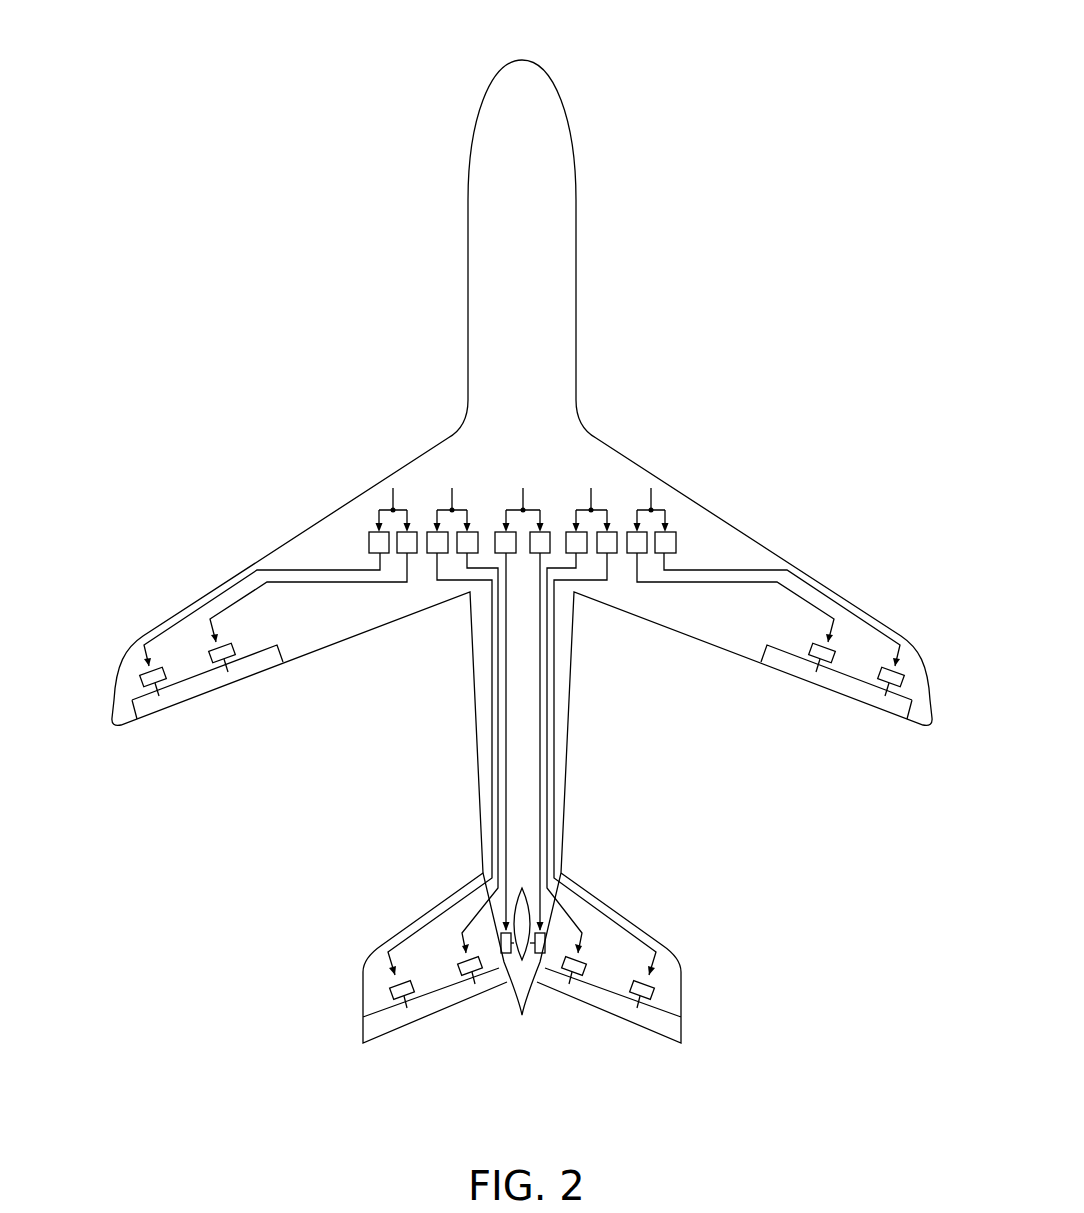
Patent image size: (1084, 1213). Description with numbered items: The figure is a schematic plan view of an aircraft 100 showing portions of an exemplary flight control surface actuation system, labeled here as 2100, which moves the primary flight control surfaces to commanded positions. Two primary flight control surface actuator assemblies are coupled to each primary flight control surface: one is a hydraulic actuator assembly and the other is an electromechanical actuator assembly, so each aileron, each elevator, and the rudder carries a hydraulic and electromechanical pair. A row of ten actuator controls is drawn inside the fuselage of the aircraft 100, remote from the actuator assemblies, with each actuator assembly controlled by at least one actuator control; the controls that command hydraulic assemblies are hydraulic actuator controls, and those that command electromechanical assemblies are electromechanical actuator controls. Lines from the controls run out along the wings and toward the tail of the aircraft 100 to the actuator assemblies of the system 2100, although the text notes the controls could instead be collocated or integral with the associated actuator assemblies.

The aircraft 100 is at (550, 84).
The sensor network / structural health monitoring system 2100 is at (665, 404).